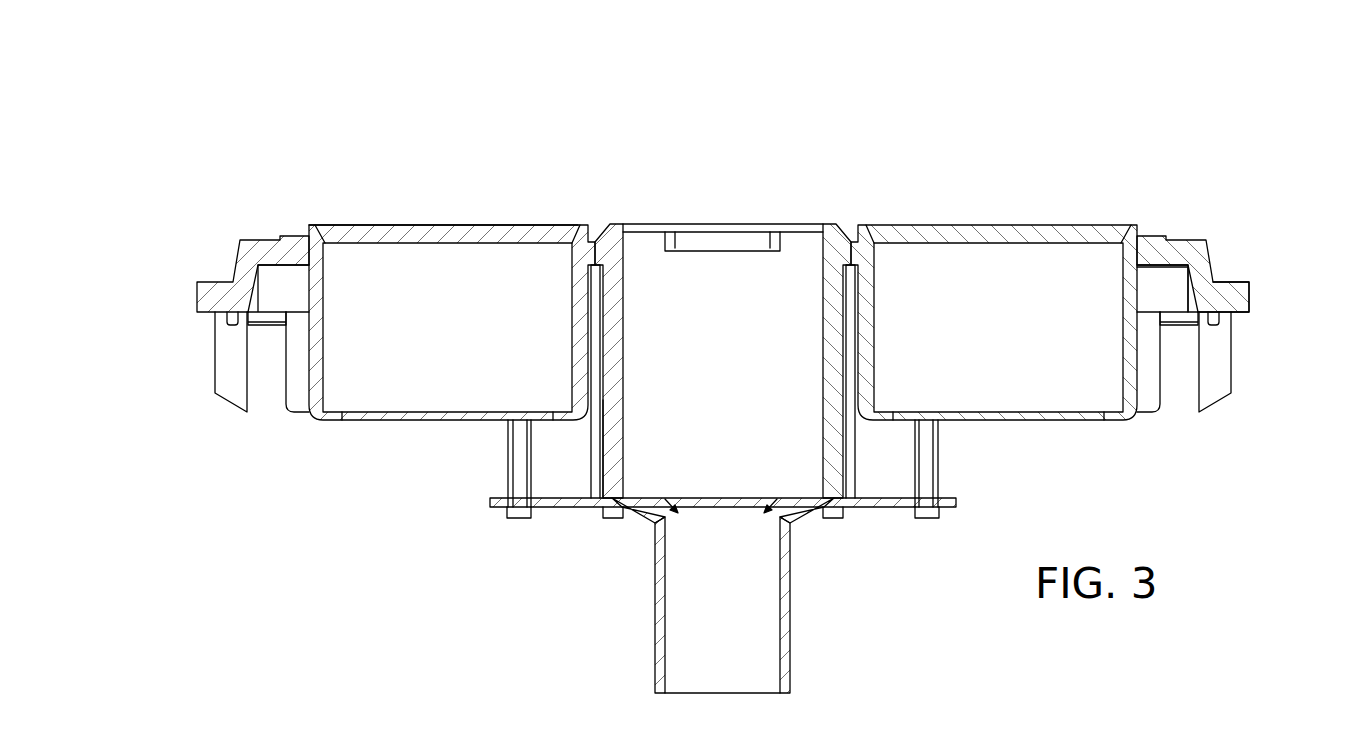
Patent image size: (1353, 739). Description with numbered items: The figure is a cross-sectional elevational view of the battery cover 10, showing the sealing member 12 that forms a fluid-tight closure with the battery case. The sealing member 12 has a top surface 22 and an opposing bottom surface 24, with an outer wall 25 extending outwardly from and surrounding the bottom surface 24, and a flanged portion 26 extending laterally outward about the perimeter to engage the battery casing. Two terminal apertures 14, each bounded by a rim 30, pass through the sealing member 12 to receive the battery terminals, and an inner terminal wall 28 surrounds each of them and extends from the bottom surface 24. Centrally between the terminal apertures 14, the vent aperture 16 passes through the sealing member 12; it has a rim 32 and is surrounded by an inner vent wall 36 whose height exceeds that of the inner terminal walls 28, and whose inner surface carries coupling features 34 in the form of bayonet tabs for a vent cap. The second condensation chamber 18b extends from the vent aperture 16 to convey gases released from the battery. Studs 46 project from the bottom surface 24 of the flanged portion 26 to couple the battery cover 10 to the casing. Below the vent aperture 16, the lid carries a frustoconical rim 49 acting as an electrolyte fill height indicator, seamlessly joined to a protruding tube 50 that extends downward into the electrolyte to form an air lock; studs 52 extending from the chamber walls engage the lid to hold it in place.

The battery cover 10 is at (1241, 93).
The sealing member 12 is at (592, 242).
The terminal apertures 14 is at (320, 240).
The vent aperture 16 is at (620, 228).
The second condensation chamber 18b is at (917, 477).
The top surface 22 is at (857, 242).
The bottom surface 24 is at (1163, 267).
The outer wall 25 is at (1212, 268).
The flanged portion 26 is at (1249, 300).
The inner terminal wall 28 is at (317, 380).
The rim 30 is at (323, 243).
The rim 32 is at (827, 228).
The coupling feature 34 is at (723, 243).
The inner vent wall 36 is at (618, 458).
The studs 46 is at (223, 358).
The frustoconical rim 49 is at (796, 512).
The protruding tube 50 is at (790, 662).
The studs 52 is at (927, 520).